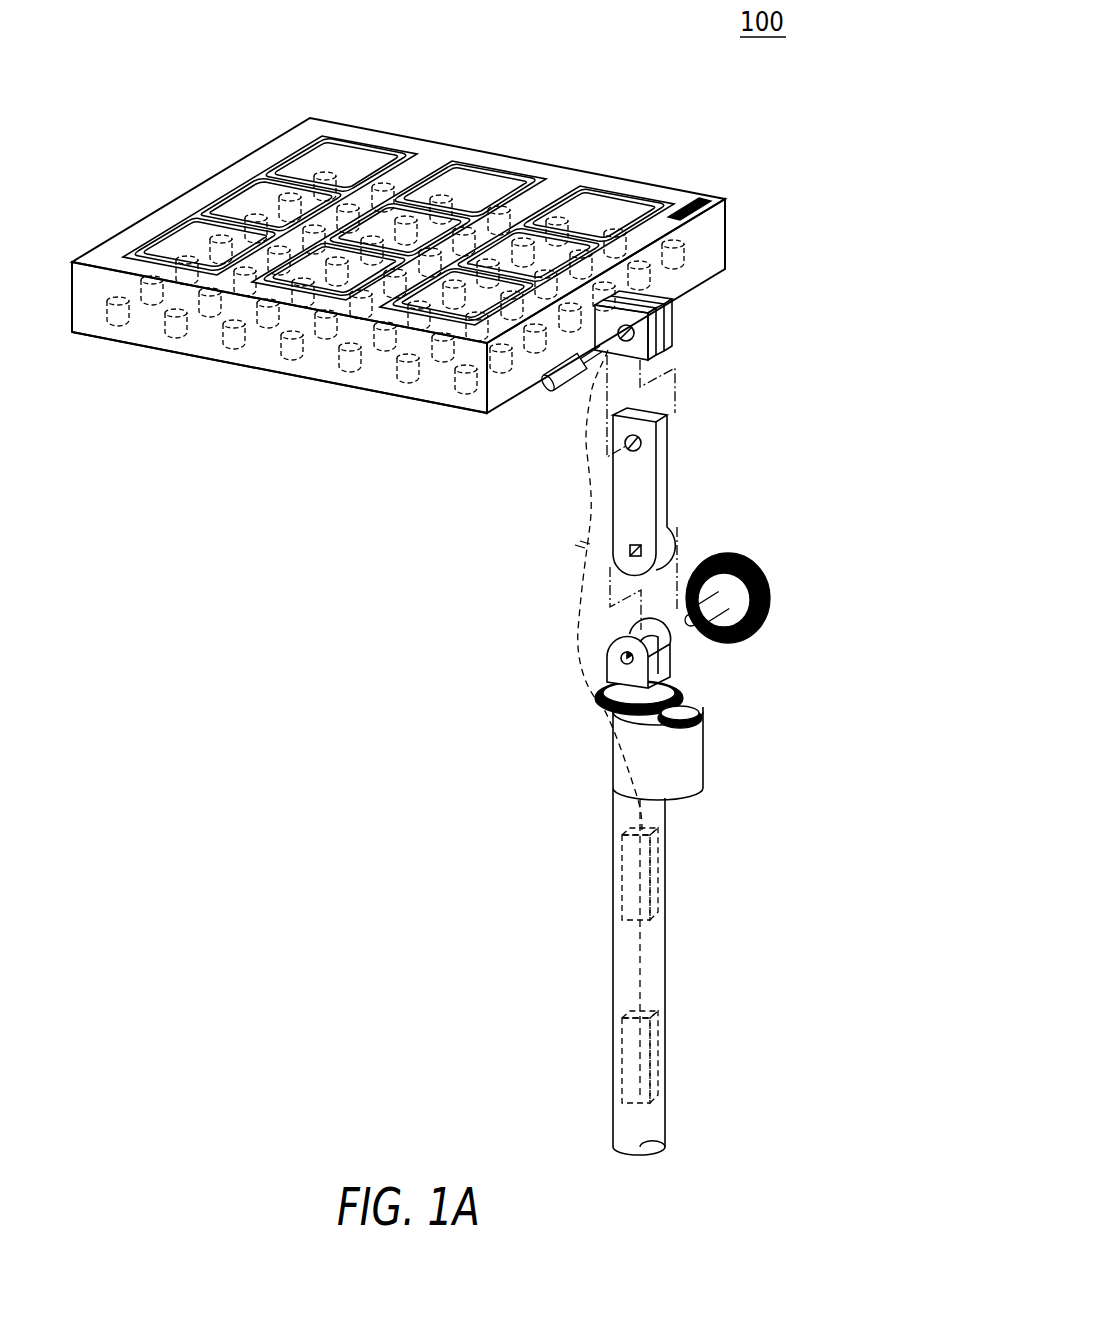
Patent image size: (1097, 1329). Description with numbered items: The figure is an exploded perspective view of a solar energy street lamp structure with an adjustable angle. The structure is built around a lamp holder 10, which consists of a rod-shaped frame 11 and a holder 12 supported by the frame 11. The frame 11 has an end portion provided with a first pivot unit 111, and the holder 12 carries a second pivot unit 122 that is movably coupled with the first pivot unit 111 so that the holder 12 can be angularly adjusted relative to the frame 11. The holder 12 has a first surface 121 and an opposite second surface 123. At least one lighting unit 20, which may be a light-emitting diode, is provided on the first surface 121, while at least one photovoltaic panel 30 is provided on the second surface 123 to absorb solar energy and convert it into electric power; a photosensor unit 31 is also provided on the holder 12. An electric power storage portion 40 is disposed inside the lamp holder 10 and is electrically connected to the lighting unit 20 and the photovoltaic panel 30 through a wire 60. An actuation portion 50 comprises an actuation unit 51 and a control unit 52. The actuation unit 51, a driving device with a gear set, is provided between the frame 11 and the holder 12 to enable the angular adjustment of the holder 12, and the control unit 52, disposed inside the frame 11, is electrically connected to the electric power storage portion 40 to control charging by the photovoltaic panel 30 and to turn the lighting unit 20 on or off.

The lamp holder 10 is at (715, 863).
The frame 11 is at (657, 960).
The first pivot unit 111 is at (672, 663).
The holder 12 is at (712, 248).
The first surface 121 is at (290, 378).
The second pivot unit 122 is at (675, 318).
The second surface 123 is at (430, 148).
The lighting unit 20 is at (178, 332).
The photovoltaic panel 30 is at (617, 207).
The photosensor unit 31 is at (700, 210).
The electric power storage portion 40 is at (630, 1050).
The actuation portion 50 is at (477, 562).
The actuation unit 51 is at (613, 538).
The control unit 52 is at (630, 878).
The wire 60 is at (581, 437).